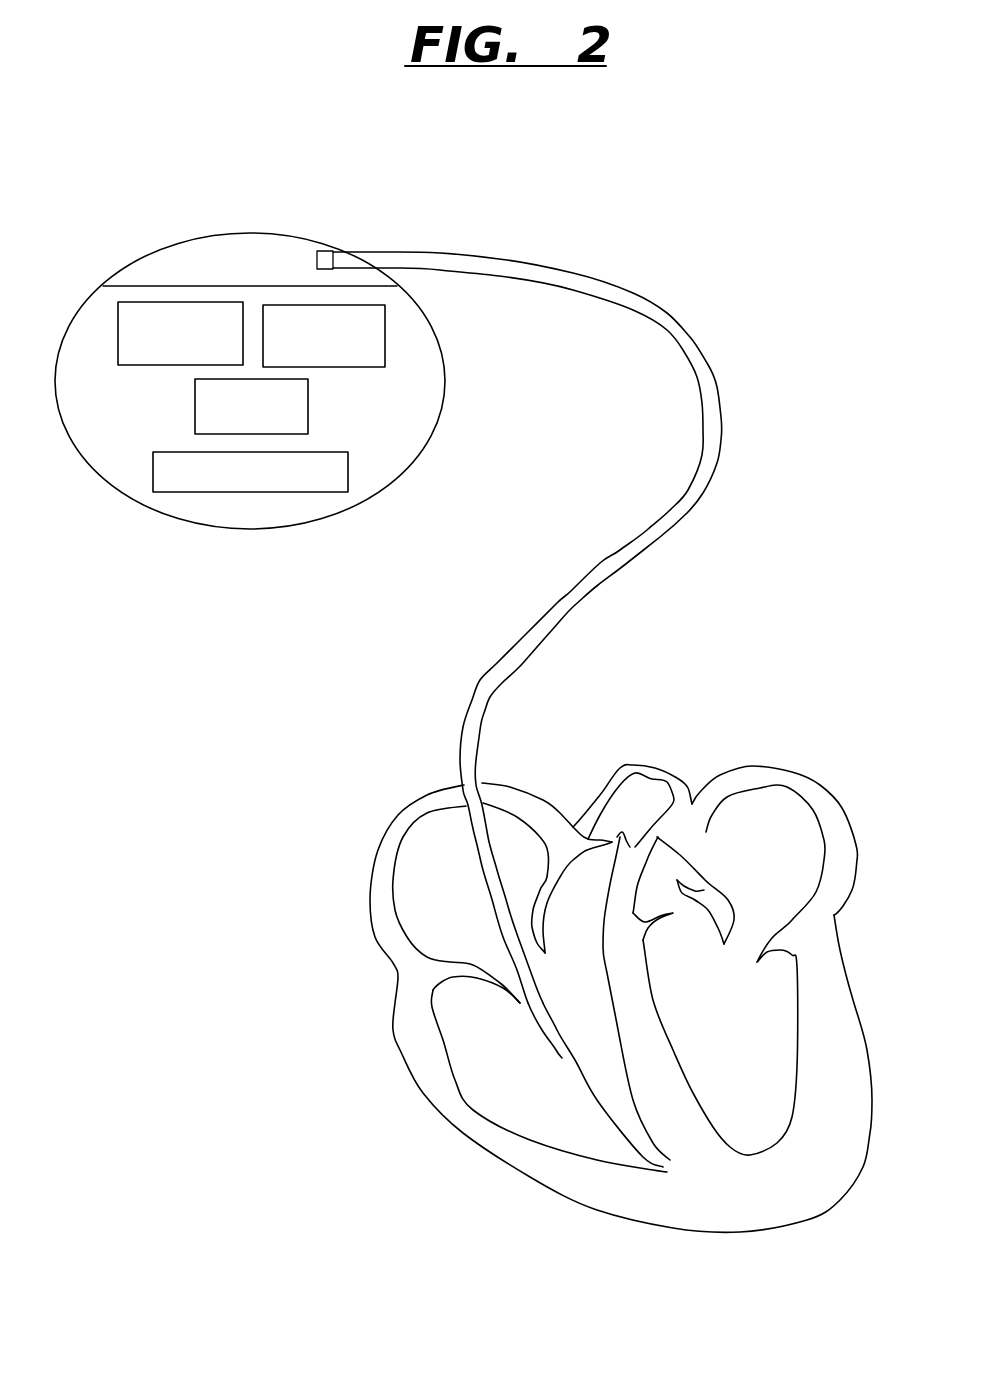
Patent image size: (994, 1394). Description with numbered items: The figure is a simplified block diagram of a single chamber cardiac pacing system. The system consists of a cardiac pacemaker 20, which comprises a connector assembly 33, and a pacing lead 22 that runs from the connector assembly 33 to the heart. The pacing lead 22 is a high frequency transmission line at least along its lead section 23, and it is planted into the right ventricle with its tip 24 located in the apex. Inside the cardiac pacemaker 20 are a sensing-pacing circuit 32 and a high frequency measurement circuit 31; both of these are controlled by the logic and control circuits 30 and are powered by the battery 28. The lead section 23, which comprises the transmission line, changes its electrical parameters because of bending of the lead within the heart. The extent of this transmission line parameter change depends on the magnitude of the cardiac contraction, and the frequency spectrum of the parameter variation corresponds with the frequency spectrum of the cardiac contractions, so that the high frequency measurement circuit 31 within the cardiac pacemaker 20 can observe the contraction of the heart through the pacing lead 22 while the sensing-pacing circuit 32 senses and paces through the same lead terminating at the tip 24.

The cardiac pacemaker 20 is at (253, 232).
The pacing lead 22 is at (723, 448).
The lead section 23 is at (562, 1058).
The tip 24 is at (672, 1172).
The battery 28 is at (250, 472).
The logic and control circuits 30 is at (251, 406).
The high frequency measurement circuit 31 is at (180, 333).
The sensing-pacing circuit 32 is at (324, 336).
The connector assembly 33 is at (317, 261).